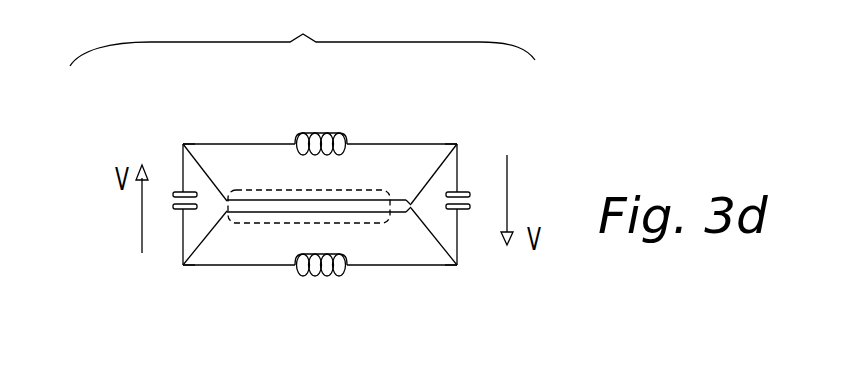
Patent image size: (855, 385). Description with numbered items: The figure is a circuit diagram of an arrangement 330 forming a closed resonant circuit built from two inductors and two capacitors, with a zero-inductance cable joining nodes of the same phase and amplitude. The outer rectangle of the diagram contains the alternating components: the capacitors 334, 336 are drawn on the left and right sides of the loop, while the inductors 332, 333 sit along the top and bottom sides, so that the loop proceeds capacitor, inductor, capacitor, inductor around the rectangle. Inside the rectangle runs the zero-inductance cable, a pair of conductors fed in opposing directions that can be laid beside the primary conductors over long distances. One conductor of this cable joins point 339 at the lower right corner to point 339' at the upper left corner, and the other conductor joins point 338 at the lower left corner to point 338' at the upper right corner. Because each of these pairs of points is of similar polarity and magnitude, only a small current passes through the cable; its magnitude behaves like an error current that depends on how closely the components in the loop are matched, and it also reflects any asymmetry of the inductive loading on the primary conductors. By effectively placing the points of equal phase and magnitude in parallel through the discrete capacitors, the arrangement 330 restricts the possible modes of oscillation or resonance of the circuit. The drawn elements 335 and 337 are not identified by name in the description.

The arrangement 330 is at (302, 36).
The inductor 332 is at (313, 131).
The inductor 333 is at (336, 278).
The capacitor 334 is at (173, 190).
The tapered conductor end 335 is at (408, 188).
The capacitor 336 is at (452, 212).
The conductor 337 is at (258, 222).
The point 338 is at (153, 298).
The point 339 is at (480, 269).
The point 338' is at (479, 139).
The point 339' is at (205, 122).